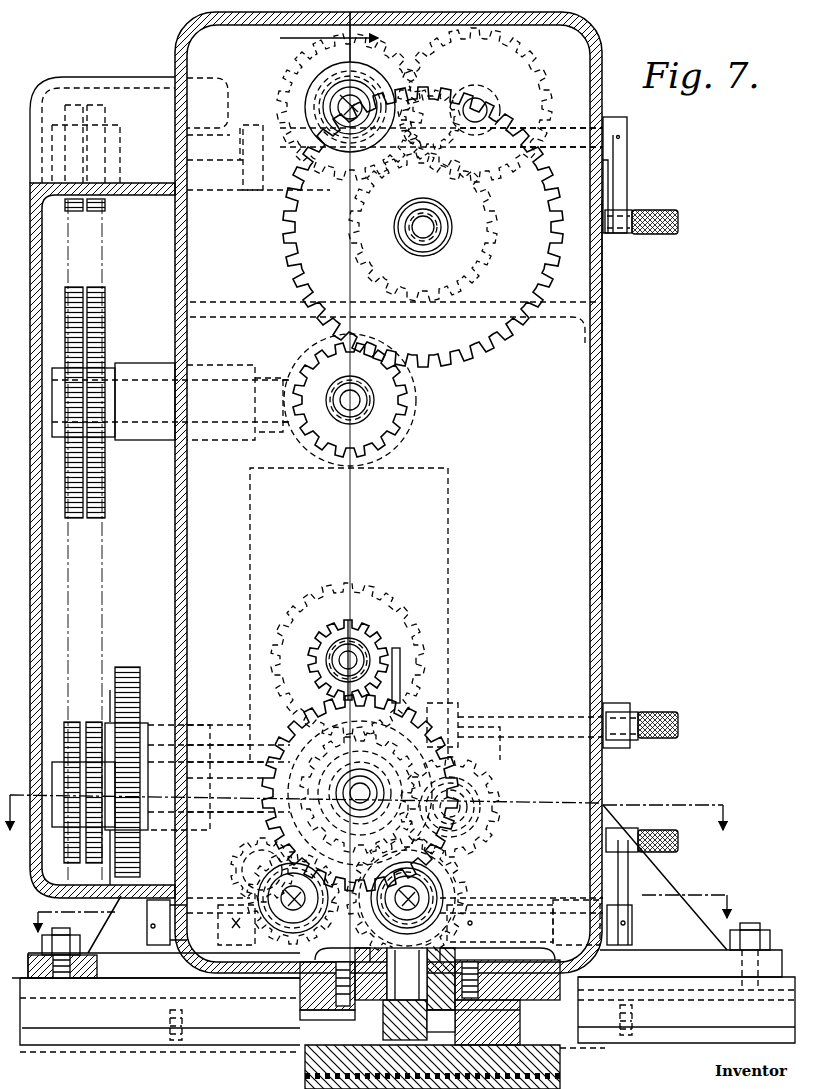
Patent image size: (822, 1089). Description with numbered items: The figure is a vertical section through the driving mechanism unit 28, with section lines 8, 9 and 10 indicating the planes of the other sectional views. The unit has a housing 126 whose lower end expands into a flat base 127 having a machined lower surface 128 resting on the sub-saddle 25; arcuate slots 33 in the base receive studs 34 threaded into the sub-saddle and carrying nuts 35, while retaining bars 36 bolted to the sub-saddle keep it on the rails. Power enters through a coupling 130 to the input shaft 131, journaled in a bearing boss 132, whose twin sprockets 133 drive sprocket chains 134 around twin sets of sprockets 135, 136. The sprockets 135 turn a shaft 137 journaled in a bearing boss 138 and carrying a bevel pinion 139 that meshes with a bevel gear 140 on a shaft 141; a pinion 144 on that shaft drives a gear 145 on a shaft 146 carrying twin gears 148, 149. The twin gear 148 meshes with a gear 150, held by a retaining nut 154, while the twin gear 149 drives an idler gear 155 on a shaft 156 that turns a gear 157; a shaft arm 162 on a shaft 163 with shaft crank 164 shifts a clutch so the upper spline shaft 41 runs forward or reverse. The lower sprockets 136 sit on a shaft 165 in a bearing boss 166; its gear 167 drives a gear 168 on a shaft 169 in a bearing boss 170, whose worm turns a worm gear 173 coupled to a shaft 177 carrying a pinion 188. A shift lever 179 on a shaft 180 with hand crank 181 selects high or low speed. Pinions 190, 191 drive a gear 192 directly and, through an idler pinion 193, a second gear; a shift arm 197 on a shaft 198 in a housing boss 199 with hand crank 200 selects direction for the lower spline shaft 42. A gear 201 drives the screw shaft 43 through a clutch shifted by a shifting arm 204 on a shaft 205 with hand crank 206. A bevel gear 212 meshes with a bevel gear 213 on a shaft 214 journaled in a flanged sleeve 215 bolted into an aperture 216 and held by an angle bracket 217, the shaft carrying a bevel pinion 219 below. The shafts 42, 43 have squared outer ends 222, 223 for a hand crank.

The section line 8 is at (315, 45).
The section line 9 is at (374, 879).
The section line 10 is at (367, 826).
The sub-saddle 25 is at (684, 1032).
The driving mechanism unit 28 is at (604, 562).
The arcuate slot 33 is at (38, 957).
The stud 34 is at (65, 923).
The nut 35 is at (78, 941).
The retaining bar 36 is at (115, 1042).
The upper spline shaft 41 is at (338, 107).
The lower spline shaft 42 is at (430, 893).
The screw shaft 43 is at (290, 888).
The housing 126 is at (602, 388).
The base 127 is at (657, 952).
The machined lower surface 128 is at (672, 975).
The coupling 130 is at (266, 192).
The input shaft 131 is at (240, 135).
The bearing boss 132 is at (152, 128).
The twin sprockets 133 is at (96, 212).
The sprocket chain 134 is at (66, 260).
The sprockets 135 is at (92, 520).
The lower twin sprockets 136 is at (96, 718).
The shaft 137 is at (152, 378).
The bearing boss 138 is at (145, 443).
The bevel pinion 139 is at (292, 362).
The bevel gear 140 is at (413, 418).
The shaft 141 is at (362, 410).
The pinion 144 is at (326, 466).
The gear 145 is at (480, 350).
The shaft 146 is at (424, 240).
The twin gear 148 is at (480, 275).
The twin gear 149 is at (488, 235).
The gear 150 is at (322, 60).
The retaining nut 154 is at (368, 78).
The idler gear 155 is at (523, 63).
The shaft 156 is at (483, 100).
The gear 157 is at (325, 82).
The shaft arm 162 is at (440, 112).
The shaft 163 is at (568, 128).
The shaft crank 164 is at (620, 178).
The shaft 165 is at (240, 858).
The bearing boss 166 is at (266, 852).
The gear 167 is at (128, 850).
The gear 168 is at (130, 668).
The shaft 169 is at (226, 738).
The bearing boss 170 is at (200, 725).
The worm gear 173 is at (383, 590).
The shaft 177 is at (332, 658).
The shift lever 179 is at (405, 660).
The shaft 180 is at (512, 715).
The hand crank 181 is at (630, 708).
The pinion 188 is at (385, 628).
The pinion 190 is at (292, 738).
The pinion 191 is at (300, 802).
The gear 192 is at (500, 813).
The idler pinion 193 is at (495, 776).
The shift arm 197 is at (455, 894).
The shaft 198 is at (556, 905).
The housing boss 199 is at (527, 905).
The hand crank 200 is at (624, 870).
The gear 201 is at (245, 1000).
The shifting arm 204 is at (285, 897).
The shaft 205 is at (215, 943).
The hand crank 206 is at (152, 922).
The bevel gear 212 is at (478, 826).
The bevel gear 213 is at (455, 950).
The shaft 214 is at (430, 979).
The flanged sleeve 215 is at (382, 1010).
The aperture 216 is at (345, 1035).
The angle bracket 217 is at (346, 1012).
The bevel pinion 219 is at (385, 1032).
The squared outer end 222 is at (368, 925).
The squared outer end 223 is at (302, 916).